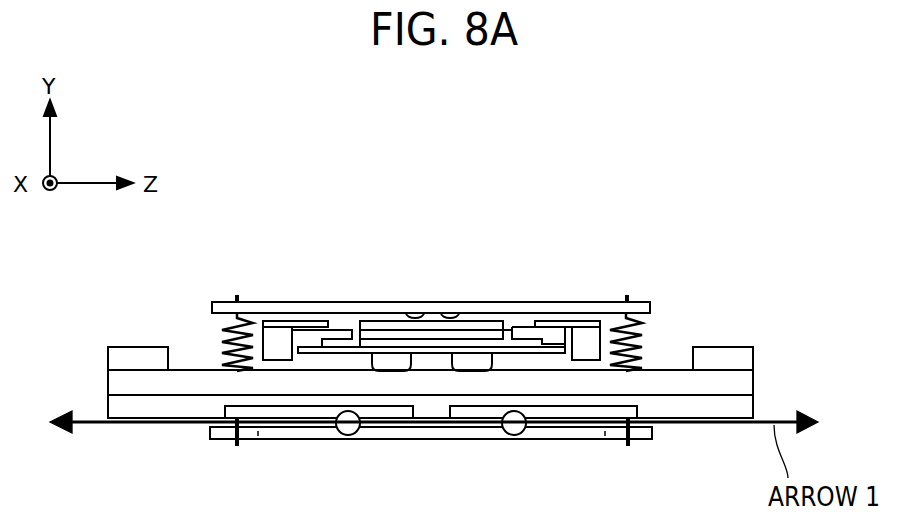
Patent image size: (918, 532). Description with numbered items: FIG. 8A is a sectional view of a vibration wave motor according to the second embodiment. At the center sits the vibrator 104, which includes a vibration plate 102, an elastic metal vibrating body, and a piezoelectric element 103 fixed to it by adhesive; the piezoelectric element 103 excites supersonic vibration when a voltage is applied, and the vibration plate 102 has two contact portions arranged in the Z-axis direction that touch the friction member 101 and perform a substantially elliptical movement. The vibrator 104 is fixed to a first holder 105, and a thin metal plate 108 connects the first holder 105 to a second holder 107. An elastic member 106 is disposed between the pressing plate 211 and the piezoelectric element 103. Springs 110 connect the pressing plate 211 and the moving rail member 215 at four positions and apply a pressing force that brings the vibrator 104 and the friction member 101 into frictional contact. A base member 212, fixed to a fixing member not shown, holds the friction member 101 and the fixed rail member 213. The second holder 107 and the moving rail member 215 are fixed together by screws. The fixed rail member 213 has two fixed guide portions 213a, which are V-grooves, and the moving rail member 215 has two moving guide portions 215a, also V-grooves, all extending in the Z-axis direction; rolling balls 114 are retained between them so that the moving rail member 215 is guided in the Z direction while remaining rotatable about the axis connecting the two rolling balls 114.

The friction member 101 is at (670, 376).
The vibration plate 102 is at (470, 348).
The piezoelectric element 103 is at (428, 335).
The vibrator 104 is at (431, 249).
The first holder 105 is at (520, 327).
The elastic member 106 is at (369, 325).
The second holder 107 is at (592, 333).
The thin metal plate 108 is at (568, 321).
The spring 110 is at (220, 340).
The rolling ball 114 is at (514, 435).
The pressing plate 211 is at (273, 302).
The base member 212 is at (744, 350).
The fixed rail member 213 is at (475, 432).
The fixed guide portion 213a is at (312, 412).
The moving rail member 215 is at (441, 465).
The moving guide portion 215a is at (573, 433).